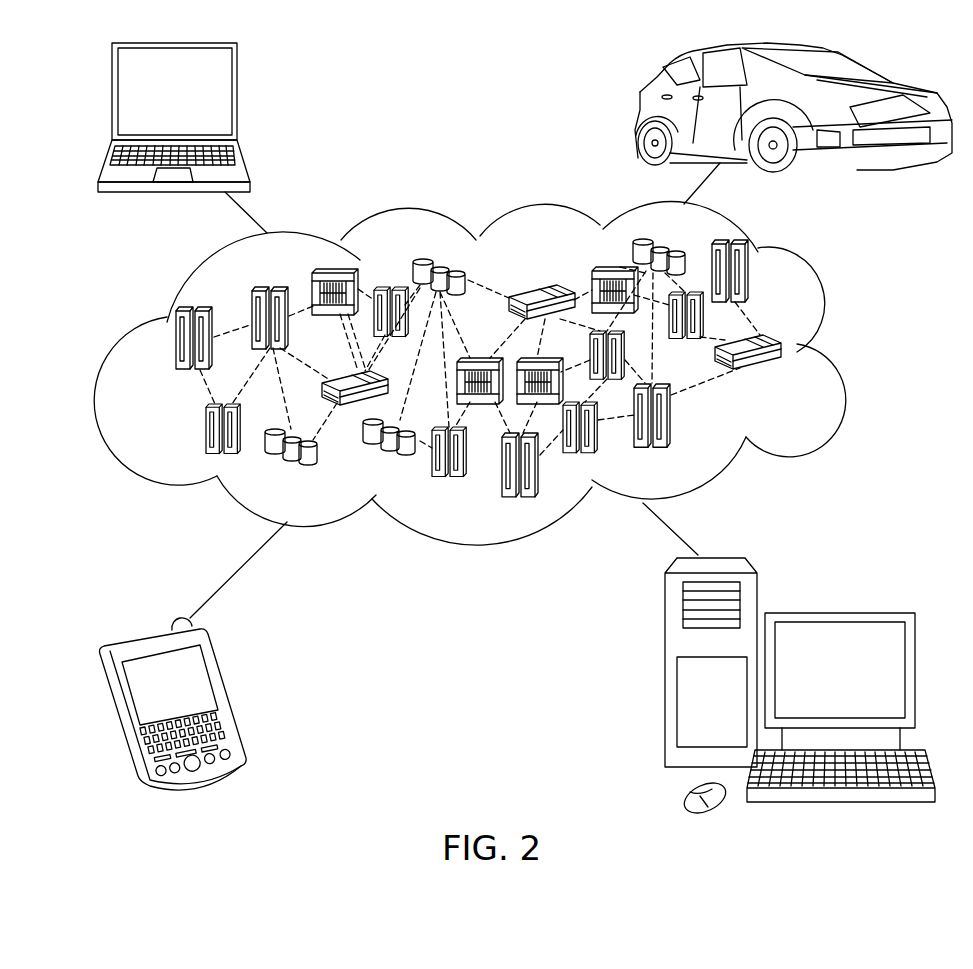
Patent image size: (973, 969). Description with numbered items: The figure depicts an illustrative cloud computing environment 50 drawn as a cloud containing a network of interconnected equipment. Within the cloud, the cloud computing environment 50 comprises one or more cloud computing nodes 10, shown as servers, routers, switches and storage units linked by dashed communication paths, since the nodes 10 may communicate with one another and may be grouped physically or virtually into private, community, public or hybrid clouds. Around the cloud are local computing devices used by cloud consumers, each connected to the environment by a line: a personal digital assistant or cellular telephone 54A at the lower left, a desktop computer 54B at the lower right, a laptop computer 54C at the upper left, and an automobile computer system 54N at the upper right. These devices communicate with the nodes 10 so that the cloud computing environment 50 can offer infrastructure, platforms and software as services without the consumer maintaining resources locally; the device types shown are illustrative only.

The cloud computing node 10 is at (787, 377).
The cloud computing environment 50 is at (835, 347).
The personal digital assistant or cellular telephone 54A is at (228, 698).
The desktop computer 54B is at (838, 612).
The laptop computer 54C is at (237, 99).
The automobile computer system 54N is at (638, 116).